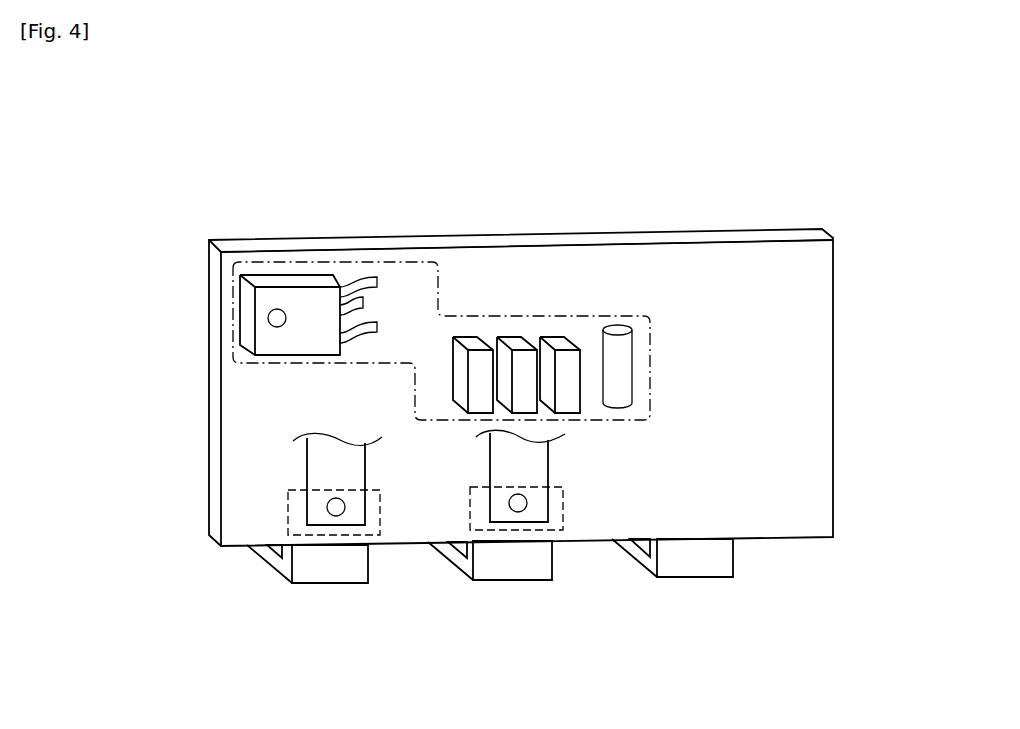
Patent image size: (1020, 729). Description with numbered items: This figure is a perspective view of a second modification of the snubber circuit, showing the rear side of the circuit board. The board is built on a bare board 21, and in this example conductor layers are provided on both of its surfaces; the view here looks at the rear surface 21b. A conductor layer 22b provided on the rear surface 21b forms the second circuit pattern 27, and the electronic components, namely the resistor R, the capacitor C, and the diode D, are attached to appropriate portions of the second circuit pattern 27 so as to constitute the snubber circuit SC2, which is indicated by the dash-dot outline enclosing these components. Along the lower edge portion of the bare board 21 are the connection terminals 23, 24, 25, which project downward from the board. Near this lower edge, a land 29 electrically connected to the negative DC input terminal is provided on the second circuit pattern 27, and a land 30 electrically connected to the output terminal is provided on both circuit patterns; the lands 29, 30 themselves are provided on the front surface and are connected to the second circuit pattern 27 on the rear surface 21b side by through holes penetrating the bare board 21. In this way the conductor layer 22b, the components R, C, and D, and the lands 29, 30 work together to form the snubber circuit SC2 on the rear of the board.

The bare board 21 is at (780, 233).
The rear surface 21b is at (700, 287).
The conductor layer 22b is at (548, 462).
The connection terminal 23 is at (690, 572).
The connection terminal 24 is at (510, 574).
The connection terminal 25 is at (320, 578).
The second circuit pattern 27 is at (307, 465).
The land 29 is at (565, 518).
The land 30 is at (378, 517).
The capacitor C is at (507, 337).
The diode D is at (298, 293).
The resistor R is at (627, 326).
The snubber circuit SC2 is at (233, 307).